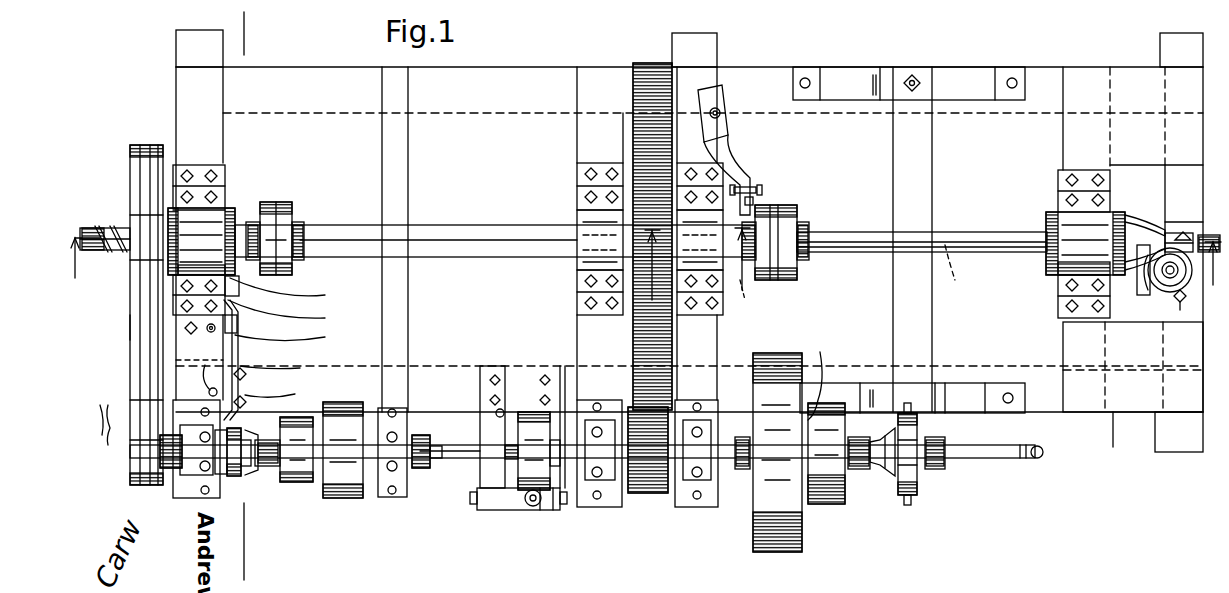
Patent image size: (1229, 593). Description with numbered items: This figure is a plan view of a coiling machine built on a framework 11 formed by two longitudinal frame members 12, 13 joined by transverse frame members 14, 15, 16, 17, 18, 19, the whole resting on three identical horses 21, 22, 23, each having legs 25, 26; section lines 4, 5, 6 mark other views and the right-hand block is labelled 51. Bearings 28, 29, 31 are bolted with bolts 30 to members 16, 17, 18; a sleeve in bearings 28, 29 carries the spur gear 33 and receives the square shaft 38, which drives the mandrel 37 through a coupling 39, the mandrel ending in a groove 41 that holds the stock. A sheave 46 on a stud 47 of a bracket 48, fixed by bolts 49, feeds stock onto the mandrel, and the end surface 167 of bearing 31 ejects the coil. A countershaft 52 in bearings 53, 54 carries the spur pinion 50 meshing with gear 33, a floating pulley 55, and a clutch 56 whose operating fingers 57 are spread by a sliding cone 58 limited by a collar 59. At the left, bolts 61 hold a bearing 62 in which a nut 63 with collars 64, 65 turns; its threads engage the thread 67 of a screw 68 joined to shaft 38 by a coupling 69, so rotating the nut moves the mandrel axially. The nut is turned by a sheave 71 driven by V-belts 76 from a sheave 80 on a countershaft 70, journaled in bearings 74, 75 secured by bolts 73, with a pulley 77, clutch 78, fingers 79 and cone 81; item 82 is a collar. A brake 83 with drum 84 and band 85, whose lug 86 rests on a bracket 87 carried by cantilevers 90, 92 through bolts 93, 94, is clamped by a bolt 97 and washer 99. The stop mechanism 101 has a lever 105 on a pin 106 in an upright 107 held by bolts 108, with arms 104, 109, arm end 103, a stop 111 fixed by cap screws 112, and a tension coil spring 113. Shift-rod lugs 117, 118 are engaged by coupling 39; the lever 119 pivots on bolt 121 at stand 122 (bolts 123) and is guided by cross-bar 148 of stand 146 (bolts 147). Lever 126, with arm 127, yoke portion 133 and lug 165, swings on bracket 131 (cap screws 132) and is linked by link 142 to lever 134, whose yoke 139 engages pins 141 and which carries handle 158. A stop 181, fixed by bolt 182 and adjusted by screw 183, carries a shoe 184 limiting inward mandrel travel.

The section line 4- 4 is at (933, 272).
The section line 5- 5 is at (410, 274).
The section line 6- 6 is at (248, 25).
The framework 11 is at (1117, 438).
The longitudinal frame member 12 is at (535, 85).
The longitudinal frame member 13 is at (430, 372).
The transverse frame member 14 is at (213, 135).
The transverse frame member 15 is at (396, 153).
The transverse frame member 16 is at (585, 137).
The transverse frame member 17 is at (695, 138).
The transverse frame member 18 is at (1105, 341).
The transverse frame member 19 is at (1163, 391).
The horse 21 is at (180, 31).
The horse 22 is at (708, 47).
The horse 23 is at (1176, 43).
The leg 25 is at (1160, 448).
The leg 26 is at (193, 48).
The bearing 28 is at (580, 212).
The bearing 29 is at (727, 292).
The bolts 30 is at (612, 172).
The bearing 31 is at (1075, 262).
The spur gear 33 is at (648, 85).
The mandrel 37 is at (975, 238).
The square shaft 38 is at (472, 232).
The coupling 39 is at (790, 270).
The groove 41 is at (1208, 234).
The sheave 46 is at (1150, 285).
The stud 47 is at (1165, 280).
The bracket 48 is at (1140, 292).
The bolts 49 is at (1183, 232).
The spur pinion 50 is at (648, 470).
The frame block 51 is at (1074, 85).
The countershaft 52 is at (508, 447).
The bearing 53 is at (598, 400).
The bearing 54 is at (688, 490).
The pulley 55 is at (775, 520).
The clutch 56 is at (825, 478).
The operating fingers 57 is at (862, 470).
The sliding cone 58 is at (887, 478).
The collar 59 is at (940, 470).
The bolts 61 is at (192, 176).
The bearing 62 is at (212, 240).
The nut 63 is at (222, 210).
The collar 64 is at (170, 200).
The collar 65 is at (235, 208).
The thread 67 is at (112, 228).
The screw 68 is at (83, 228).
The coupling 69 is at (282, 225).
The countershaft 70 is at (435, 460).
The sheave 71 is at (130, 325).
The bolts 73 is at (205, 437).
The bearing 74 is at (205, 412).
The bearing 75 is at (415, 468).
The V-belts 76 is at (155, 160).
The pulley 77 is at (344, 470).
The clutch 78 is at (296, 432).
The operating fingers 79 is at (268, 466).
The sheave 80 is at (130, 415).
The sliding cone 81 is at (250, 470).
The collar 82 is at (511, 452).
The brake 83 is at (520, 425).
The brake drum 84 is at (528, 412).
The brake band 85 is at (540, 420).
The lug 86 is at (560, 500).
The bracket 87 is at (505, 500).
The cantilever 90 is at (562, 380).
The cantilever 92 is at (494, 375).
The bolts 93 is at (505, 375).
The bolts 94 is at (475, 500).
The bolt 97 is at (542, 508).
The washer 99 is at (532, 506).
The stop mechanism 101 is at (297, 291).
The end of arm 103 is at (296, 313).
The arm 104 is at (234, 342).
The lever 105 is at (281, 373).
The pin 106 is at (240, 326).
The upright 107 is at (291, 333).
The bolts 108 is at (209, 326).
The arm 109 is at (196, 384).
The stop 111 is at (233, 284).
The cap screws 112 is at (182, 283).
The tension coil spring 113 is at (199, 366).
The lug 117 is at (760, 304).
The lug 118 is at (961, 274).
The lever 119 is at (918, 151).
The bolt 121 is at (914, 74).
The stand 122 is at (862, 78).
The bolts 123 is at (808, 78).
The lever 126 is at (240, 476).
The arm 127 is at (215, 468).
The bracket 131 is at (283, 395).
The cap screws 132 is at (246, 374).
The yoke portion 133 is at (228, 475).
The lever 134 is at (917, 465).
The yoke 139 is at (910, 427).
The pins 141 is at (907, 403).
The link 142 is at (460, 455).
The stand 146 is at (855, 390).
The bolts 147 is at (1006, 392).
The cross-bar 148 is at (925, 392).
The handle 158 is at (1040, 458).
The lug 165 is at (240, 437).
The end surface 167 is at (1160, 232).
The stop 181 is at (748, 170).
The bolt 182 is at (716, 108).
The screw 183 is at (763, 190).
The shoe 184 is at (753, 202).